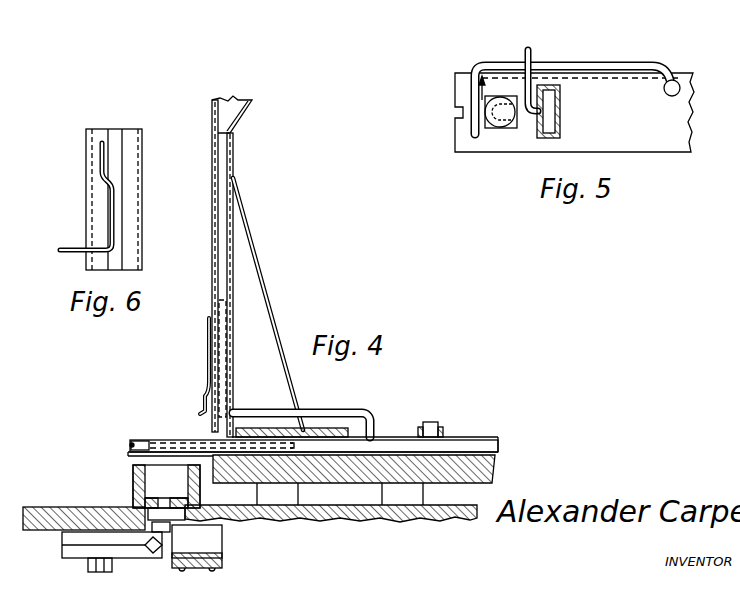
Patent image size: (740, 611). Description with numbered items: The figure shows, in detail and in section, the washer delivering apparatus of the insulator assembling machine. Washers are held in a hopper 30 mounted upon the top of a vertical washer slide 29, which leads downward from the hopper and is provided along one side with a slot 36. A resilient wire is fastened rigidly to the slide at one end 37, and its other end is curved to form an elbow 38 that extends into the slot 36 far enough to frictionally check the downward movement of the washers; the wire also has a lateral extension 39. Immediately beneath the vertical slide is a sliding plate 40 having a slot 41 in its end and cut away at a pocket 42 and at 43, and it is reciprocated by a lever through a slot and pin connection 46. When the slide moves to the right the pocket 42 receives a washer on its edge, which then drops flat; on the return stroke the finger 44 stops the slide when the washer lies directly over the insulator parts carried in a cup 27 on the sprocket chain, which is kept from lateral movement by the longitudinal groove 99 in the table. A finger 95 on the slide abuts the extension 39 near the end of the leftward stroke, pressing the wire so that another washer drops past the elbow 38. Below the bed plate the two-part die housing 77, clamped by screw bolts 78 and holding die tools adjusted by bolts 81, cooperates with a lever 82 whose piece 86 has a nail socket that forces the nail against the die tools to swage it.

In FIG. 4, the cup 27 is at (133, 490).
In FIG. 6, the vertical washer slide 29 is at (133, 150).
In FIG. 5, the vertical washer slide 29 is at (560, 118).
In FIG. 4, the vertical washer slide 29 is at (225, 222).
In FIG. 4, the hopper 30 is at (238, 117).
In FIG. 6, the slot 36 is at (112, 142).
In FIG. 5, the slot 36 is at (538, 113).
In FIG. 6, the fastened end of resilient wire 37 is at (100, 155).
In FIG. 4, the fastened end of resilient wire 37 is at (207, 325).
In FIG. 6, the elbow 38 is at (113, 228).
In FIG. 4, the elbow 38 is at (212, 405).
In FIG. 6, the lateral extension 39 is at (68, 247).
In FIG. 5, the lateral extension 39 is at (525, 53).
In FIG. 5, the sliding plate 40 is at (660, 145).
In FIG. 4, the sliding plate 40 is at (372, 447).
In FIG. 5, the slot 41 is at (463, 109).
In FIG. 5, the pocket or cutaway portion 42 is at (493, 130).
In FIG. 5, the cutaway portion 43 is at (468, 142).
In FIG. 4, the cutaway portion 43 is at (130, 452).
In FIG. 5, the finger 44 is at (476, 92).
In FIG. 4, the finger 44 is at (133, 443).
In FIG. 4, the slot and pin connection 46 is at (440, 427).
In FIG. 4, the die housing 77 is at (67, 555).
In FIG. 4, the screw bolts 78 is at (88, 568).
In FIG. 4, the bolts 81 is at (155, 555).
In FIG. 4, the lever 82 is at (202, 568).
In FIG. 4, the piece 86 is at (217, 540).
In FIG. 5, the finger 95 is at (613, 62).
In FIG. 4, the finger 95 is at (332, 413).
In FIG. 4, the longitudinal groove 99 is at (197, 508).